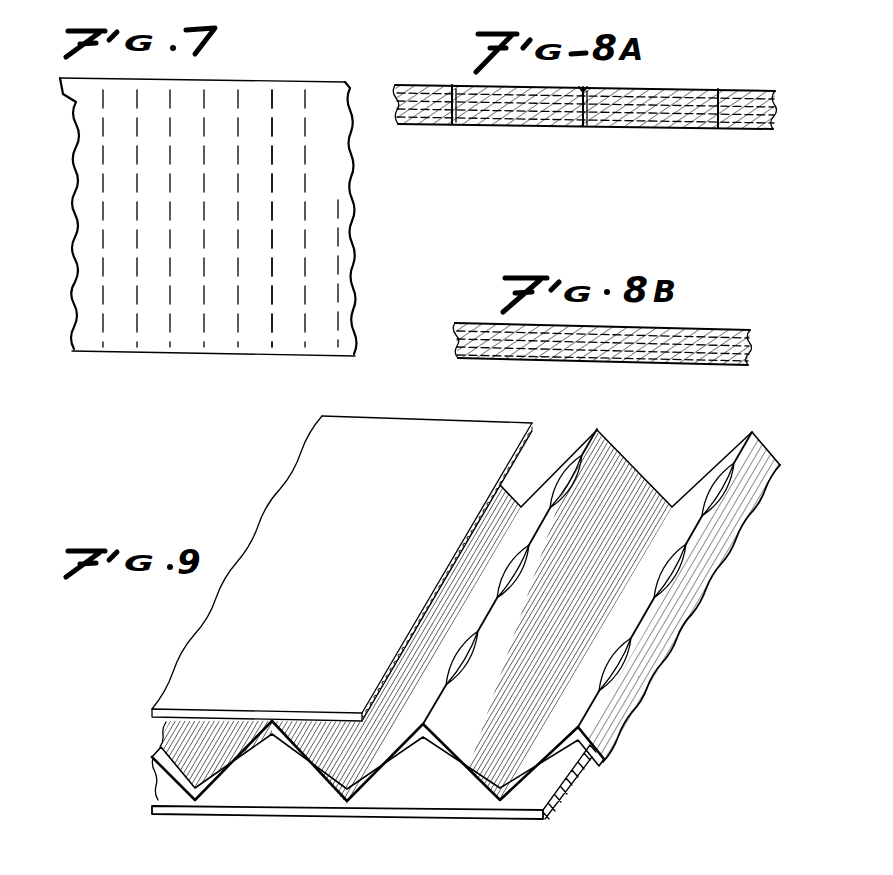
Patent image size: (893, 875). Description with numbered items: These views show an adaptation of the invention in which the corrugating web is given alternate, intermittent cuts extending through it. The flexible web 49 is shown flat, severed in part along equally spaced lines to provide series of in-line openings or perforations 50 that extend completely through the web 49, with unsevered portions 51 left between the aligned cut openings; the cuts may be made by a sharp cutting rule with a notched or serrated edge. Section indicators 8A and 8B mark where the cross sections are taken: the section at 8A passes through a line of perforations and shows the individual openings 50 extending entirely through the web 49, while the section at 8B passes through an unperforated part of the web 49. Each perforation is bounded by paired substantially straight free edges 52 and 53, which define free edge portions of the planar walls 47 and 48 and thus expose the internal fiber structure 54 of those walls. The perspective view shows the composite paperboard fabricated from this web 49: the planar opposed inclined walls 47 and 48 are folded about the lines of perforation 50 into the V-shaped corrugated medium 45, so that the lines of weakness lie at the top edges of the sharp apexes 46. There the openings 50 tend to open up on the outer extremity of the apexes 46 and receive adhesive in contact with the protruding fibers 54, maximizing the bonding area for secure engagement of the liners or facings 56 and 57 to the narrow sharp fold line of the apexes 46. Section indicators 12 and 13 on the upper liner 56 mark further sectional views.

In FIG. 9, the section line 12- 12 is at (400, 550).
In FIG. 9, the section line 13- 13 is at (323, 680).
In FIG. 7, the cross sectional view 8A is at (216, 112).
In FIG. 7, the cross sectional view 8B is at (251, 265).
In FIG. 9, the V-shaped corrugated medium 45 is at (622, 461).
In FIG. 9, the apexes 46 is at (502, 809).
In FIG. 9, the planar wall 47 is at (541, 483).
In FIG. 9, the planar wall 48 is at (653, 494).
In FIG. 7, the flexible web 49 is at (116, 362).
In FIG. 8A, the flexible web 49 is at (545, 130).
In FIG. 8B, the flexible web 49 is at (691, 325).
In FIG. 7, the openings 50 is at (313, 92).
In FIG. 8A, the openings 50 is at (452, 86).
In FIG. 9, the openings 50 is at (570, 470).
In FIG. 7, the unsevered portions 51 is at (272, 318).
In FIG. 9, the unsevered portions 51 is at (492, 613).
In FIG. 9, the free edge 52 is at (636, 649).
In FIG. 9, the free edge 53 is at (585, 656).
In FIG. 8A, the internal fiber structure 54 is at (460, 110).
In FIG. 9, the internal fiber structure 54 is at (678, 563).
In FIG. 9, the liner 56 is at (283, 574).
In FIG. 9, the liner 57 is at (430, 813).